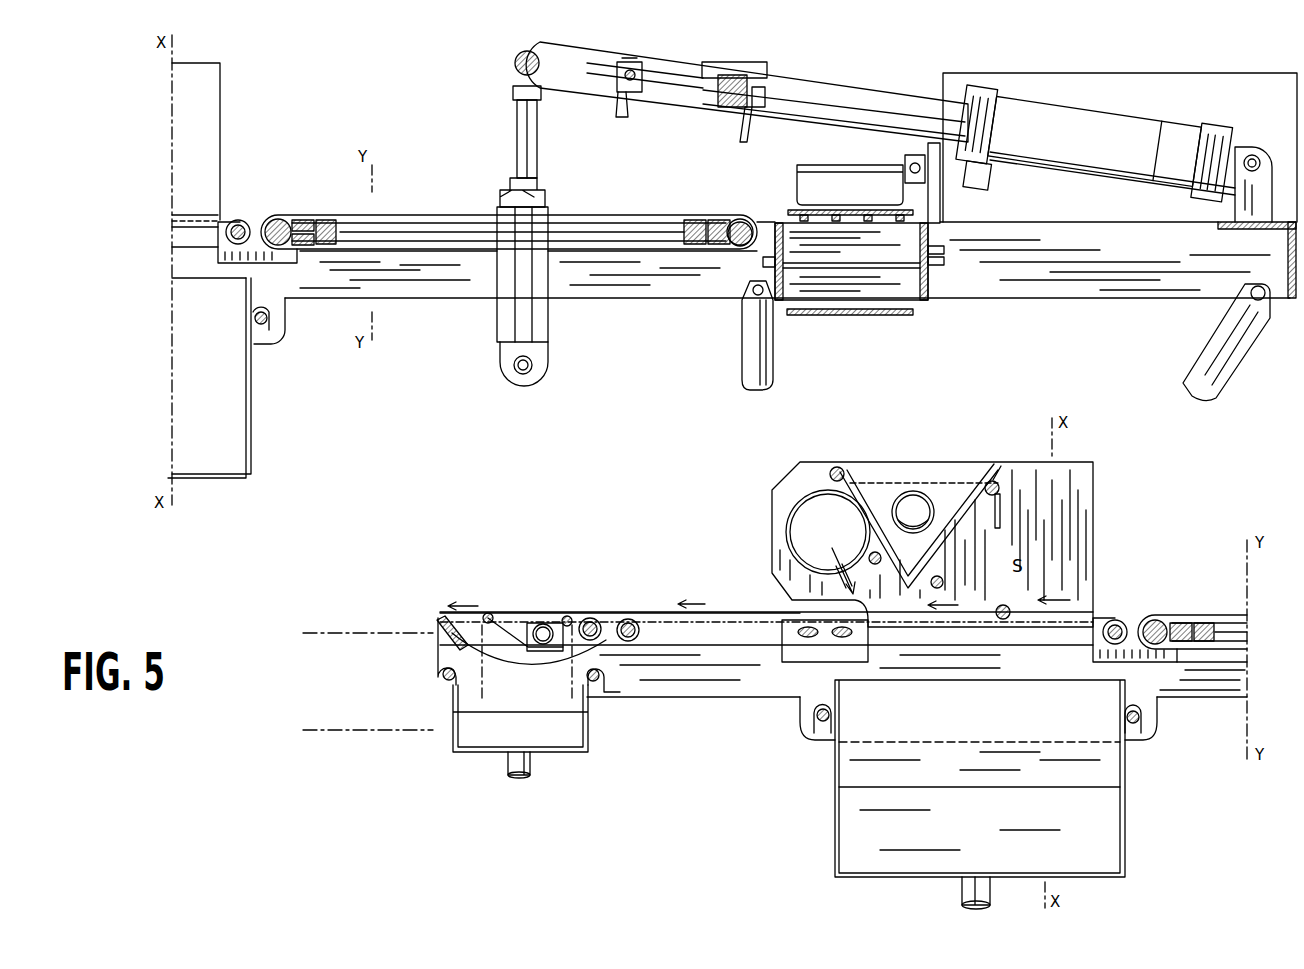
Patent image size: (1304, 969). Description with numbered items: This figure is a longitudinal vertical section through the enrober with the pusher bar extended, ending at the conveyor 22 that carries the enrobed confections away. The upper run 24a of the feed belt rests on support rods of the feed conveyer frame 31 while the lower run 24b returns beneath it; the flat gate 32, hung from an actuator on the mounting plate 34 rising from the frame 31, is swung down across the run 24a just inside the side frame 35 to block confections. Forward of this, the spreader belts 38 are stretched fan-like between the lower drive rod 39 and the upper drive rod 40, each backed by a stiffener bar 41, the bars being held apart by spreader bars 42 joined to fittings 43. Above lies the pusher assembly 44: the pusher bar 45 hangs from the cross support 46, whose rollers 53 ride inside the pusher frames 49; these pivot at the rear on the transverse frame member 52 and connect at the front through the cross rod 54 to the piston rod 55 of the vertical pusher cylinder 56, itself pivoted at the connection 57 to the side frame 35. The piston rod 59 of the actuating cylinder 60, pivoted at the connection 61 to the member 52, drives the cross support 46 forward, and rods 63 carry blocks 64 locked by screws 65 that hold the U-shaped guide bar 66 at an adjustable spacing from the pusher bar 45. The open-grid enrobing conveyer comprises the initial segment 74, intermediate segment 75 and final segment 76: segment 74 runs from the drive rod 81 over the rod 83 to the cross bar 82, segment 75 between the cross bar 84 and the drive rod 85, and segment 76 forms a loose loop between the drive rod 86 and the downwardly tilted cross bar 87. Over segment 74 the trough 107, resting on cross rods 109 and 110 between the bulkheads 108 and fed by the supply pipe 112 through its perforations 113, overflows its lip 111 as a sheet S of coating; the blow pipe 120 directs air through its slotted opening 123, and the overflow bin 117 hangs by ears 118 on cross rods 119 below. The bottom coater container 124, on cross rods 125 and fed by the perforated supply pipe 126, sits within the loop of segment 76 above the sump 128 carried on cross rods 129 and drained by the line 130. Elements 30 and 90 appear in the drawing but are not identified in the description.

The conveyor 22 is at (335, 632).
The upper run of the feed conveyer belt 24a is at (790, 208).
The lower run of the feed conveyer belt 24b is at (885, 318).
The mounting plate 30 is at (925, 212).
The feed conveyer frame 31 is at (928, 292).
The gate 32 is at (795, 178).
The mounting plate 34 is at (944, 228).
The side frame 35 is at (790, 459).
The spreader belts 38 is at (668, 217).
The lower drive rod 39 is at (740, 249).
The upper drive rod 40 is at (280, 248).
The stiffener bar 41 is at (300, 218).
The spreader bars 42 is at (445, 244).
The fitting 43 is at (326, 218).
The pusher assembly 44 is at (908, 72).
The pusher bar 45 is at (740, 132).
The cross support 46 is at (745, 90).
The pusher frames 49 is at (584, 50).
The rear transverse frame member 52 is at (1282, 225).
The roller 53 is at (732, 62).
The cross rod 54 is at (518, 55).
The piston rod 55 is at (517, 130).
The pneumatic pusher cylinder 56 is at (548, 310).
The pivotal connection 57 is at (535, 365).
The piston rod 59 is at (850, 104).
The actuating cylinder 60 is at (1110, 130).
The pivotal connection 61 is at (1254, 155).
The rod 63 is at (665, 72).
The block 64 is at (620, 60).
The locking screw 65 is at (634, 82).
The guide bar 66 is at (616, 110).
The initial conveyer segment 74 is at (210, 216).
The intermediate conveyer segment 75 is at (666, 612).
The final conveyer segment 76 is at (448, 606).
The drive rod 81 is at (244, 222).
The cross bar 82 is at (848, 640).
The rod 83 is at (1008, 606).
The cross bar 84 is at (808, 650).
The drive rod 85 is at (629, 618).
The drive rod 86 is at (588, 618).
The cross bar 87 is at (438, 622).
The lug 90 is at (742, 374).
The trough 107 is at (958, 540).
The bulkheads 108 is at (932, 544).
The cross rod 109 is at (828, 470).
The rear cross rod 110 is at (998, 482).
The lip 111 is at (1001, 504).
The supply pipe 112 is at (918, 492).
The perforations 113 is at (897, 518).
The overflow bin 117 is at (250, 420).
The ears 118 is at (1142, 733).
The cross rods 119 is at (822, 726).
The blow pipe 120 is at (786, 532).
The slotted opening 123 is at (833, 578).
The open top container 124 is at (528, 650).
The cross rods 125 is at (488, 626).
The perforated supply pipe 126 is at (538, 623).
The sump 128 is at (587, 710).
The cross rods 129 is at (438, 692).
The drain line 130 is at (532, 762).